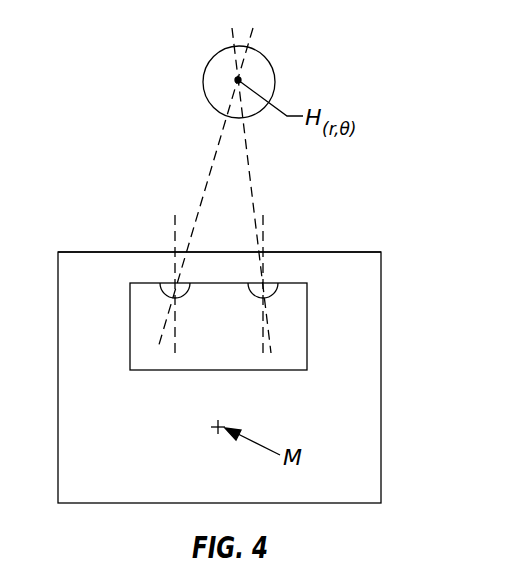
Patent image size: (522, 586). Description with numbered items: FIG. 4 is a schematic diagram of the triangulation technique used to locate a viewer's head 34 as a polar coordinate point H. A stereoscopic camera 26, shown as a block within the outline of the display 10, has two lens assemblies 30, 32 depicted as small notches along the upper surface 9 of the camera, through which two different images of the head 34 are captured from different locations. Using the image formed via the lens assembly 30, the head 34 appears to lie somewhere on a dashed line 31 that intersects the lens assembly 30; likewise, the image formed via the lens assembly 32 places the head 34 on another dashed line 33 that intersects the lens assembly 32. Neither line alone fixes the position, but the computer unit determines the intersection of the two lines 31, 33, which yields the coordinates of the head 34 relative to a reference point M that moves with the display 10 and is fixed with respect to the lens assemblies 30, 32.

The substrate surface 9 is at (227, 236).
The display 10 is at (246, 377).
The stereoscopic camera 26 is at (245, 343).
The lens assembly 30 is at (151, 276).
The lens assembly 32 is at (287, 276).
The line 31 is at (204, 188).
The line 33 is at (268, 190).
The head 34 is at (264, 73).